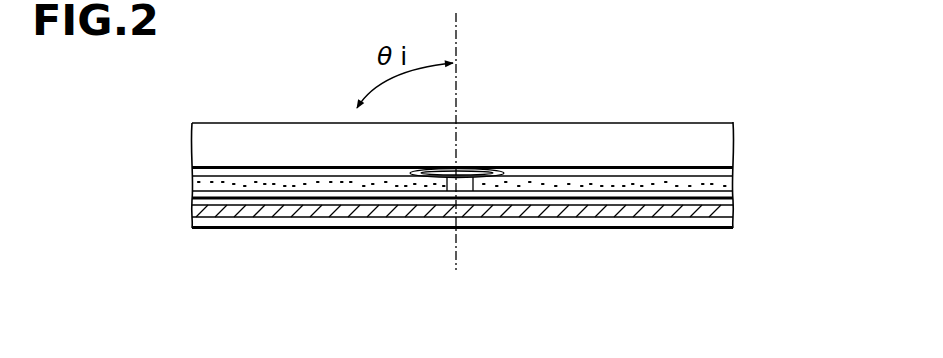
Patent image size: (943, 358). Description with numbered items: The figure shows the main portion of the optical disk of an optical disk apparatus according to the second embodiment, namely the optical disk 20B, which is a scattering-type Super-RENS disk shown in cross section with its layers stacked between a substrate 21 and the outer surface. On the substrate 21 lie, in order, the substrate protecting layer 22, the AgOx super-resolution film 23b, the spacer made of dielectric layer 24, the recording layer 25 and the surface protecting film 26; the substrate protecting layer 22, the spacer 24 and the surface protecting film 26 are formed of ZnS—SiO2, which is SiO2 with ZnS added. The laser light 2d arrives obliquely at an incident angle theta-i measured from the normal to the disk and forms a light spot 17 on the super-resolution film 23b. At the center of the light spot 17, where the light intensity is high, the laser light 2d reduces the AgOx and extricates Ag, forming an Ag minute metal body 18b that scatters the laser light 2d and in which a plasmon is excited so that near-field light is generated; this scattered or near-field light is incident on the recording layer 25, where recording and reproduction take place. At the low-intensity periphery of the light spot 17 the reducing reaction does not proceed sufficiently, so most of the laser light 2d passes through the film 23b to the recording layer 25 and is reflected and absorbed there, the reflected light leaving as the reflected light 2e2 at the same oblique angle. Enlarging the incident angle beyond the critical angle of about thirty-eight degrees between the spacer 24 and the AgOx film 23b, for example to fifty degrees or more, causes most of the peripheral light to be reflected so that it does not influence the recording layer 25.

The optical disk 20B is at (317, 248).
The substrate 21 is at (718, 142).
The substrate protecting layer 22 is at (192, 172).
The AgOx super-resolution film 23b is at (733, 180).
The spacer made of dielectric layer 24 is at (192, 200).
The recording layer 25 is at (733, 205).
The surface protecting film 26 is at (192, 228).
The Ag minute metal body 18b is at (462, 182).
The light spot 17 is at (470, 182).
The laser light 2d is at (403, 180).
The reflected light beam 2e2 is at (503, 182).